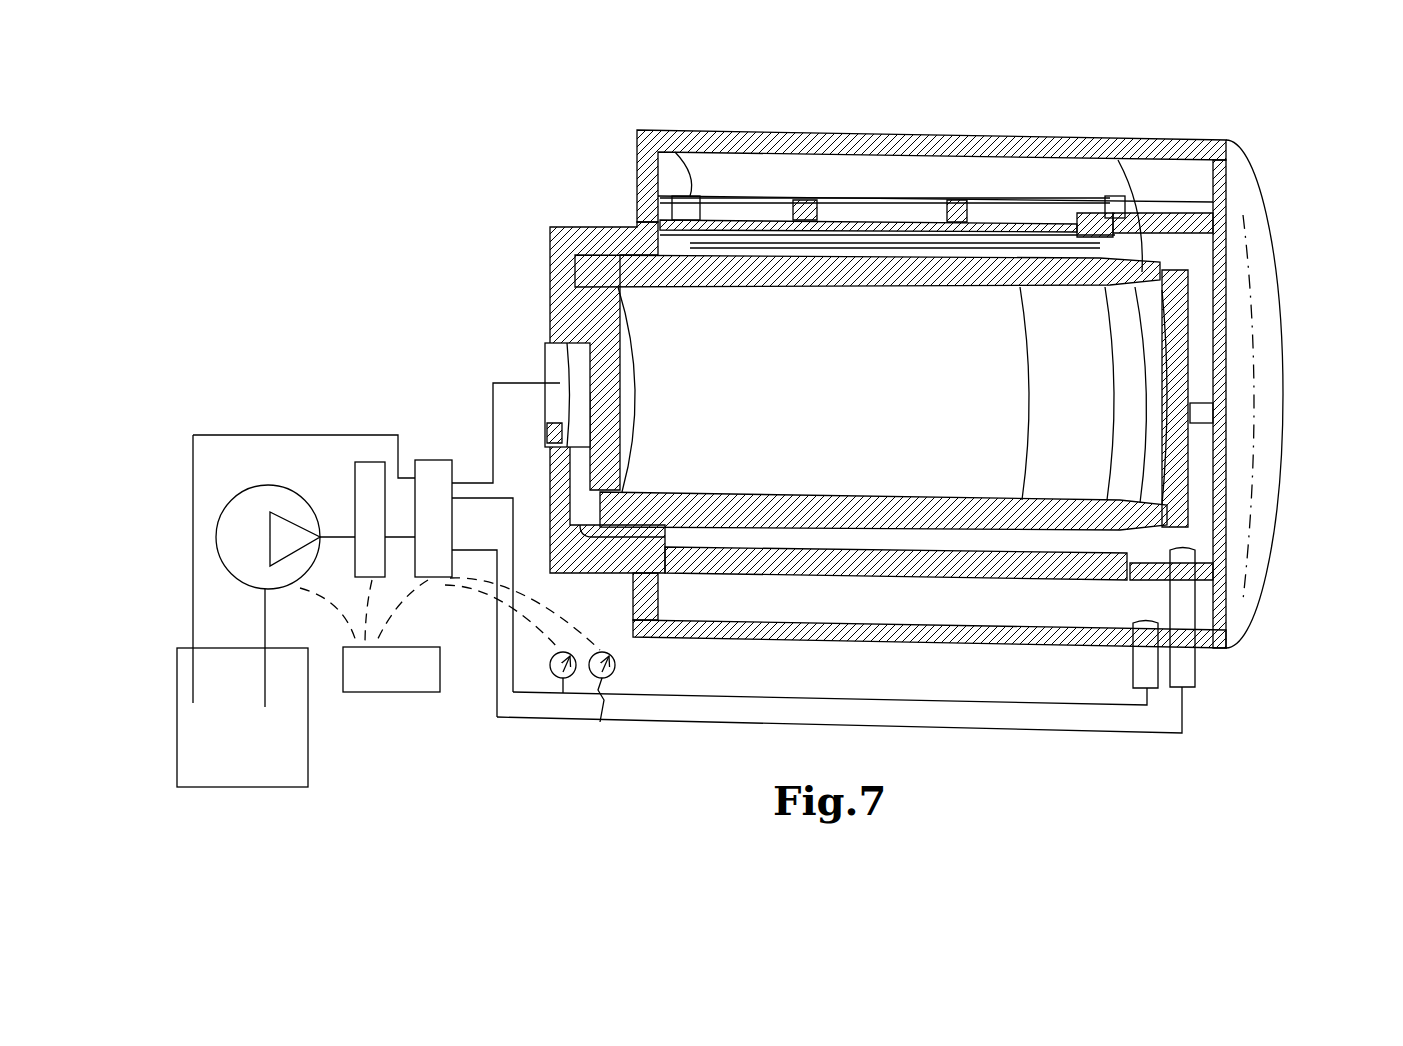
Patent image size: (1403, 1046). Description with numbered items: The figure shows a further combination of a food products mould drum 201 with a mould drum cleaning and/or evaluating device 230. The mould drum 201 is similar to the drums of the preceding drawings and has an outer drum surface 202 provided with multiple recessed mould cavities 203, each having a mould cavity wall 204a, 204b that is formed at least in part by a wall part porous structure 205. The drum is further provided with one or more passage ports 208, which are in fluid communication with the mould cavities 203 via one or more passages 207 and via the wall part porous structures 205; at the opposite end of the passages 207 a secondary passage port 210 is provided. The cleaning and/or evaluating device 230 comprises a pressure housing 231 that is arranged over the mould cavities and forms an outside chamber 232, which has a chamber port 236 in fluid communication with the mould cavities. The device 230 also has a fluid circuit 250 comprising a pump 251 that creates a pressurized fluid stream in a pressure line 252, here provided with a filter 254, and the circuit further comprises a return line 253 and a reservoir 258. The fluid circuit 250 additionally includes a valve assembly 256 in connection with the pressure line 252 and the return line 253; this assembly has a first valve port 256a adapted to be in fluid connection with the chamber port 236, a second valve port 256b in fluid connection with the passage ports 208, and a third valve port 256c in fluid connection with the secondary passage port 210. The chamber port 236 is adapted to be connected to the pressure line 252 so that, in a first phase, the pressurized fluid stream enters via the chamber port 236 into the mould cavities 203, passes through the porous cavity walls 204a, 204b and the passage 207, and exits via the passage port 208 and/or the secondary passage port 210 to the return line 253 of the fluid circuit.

The mould drum cleaning and/or evaluating device 230 is at (1278, 167).
The pressure housing 231 is at (1083, 152).
The outside chamber 232 is at (752, 182).
The food products mould drum 201 is at (806, 300).
The outer drum surface 202 is at (808, 212).
The mould cavities 203 is at (880, 220).
The mould cavity wall 204a is at (947, 236).
The mould cavity wall 204b is at (1030, 223).
The wall part porous structure 205 is at (962, 222).
The passage 207 is at (985, 268).
The passage port 208 is at (583, 372).
The secondary passage port 210 is at (1185, 615).
The chamber port 236 is at (1140, 661).
The fluid circuit 250 is at (373, 334).
The pump 251 is at (253, 507).
The pressure line 252 is at (338, 537).
The return line 253 is at (193, 608).
The filter 254 is at (372, 477).
The valve assembly 256 is at (437, 470).
The first valve port 256a is at (457, 504).
The second valve port 256b is at (459, 477).
The third valve port 256c is at (461, 562).
The reservoir 258 is at (242, 717).